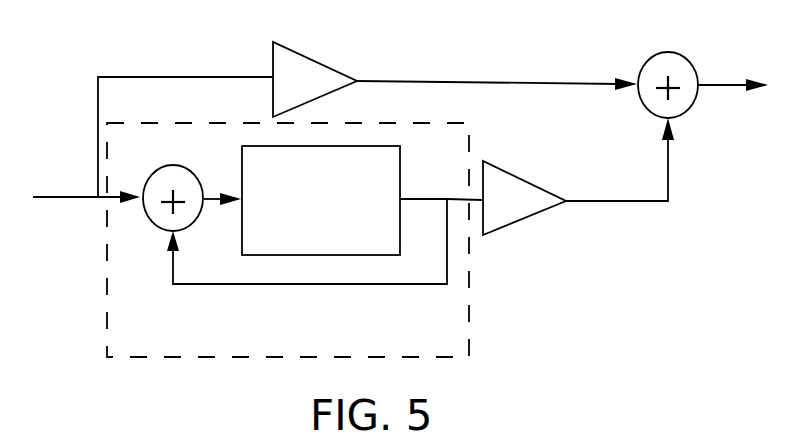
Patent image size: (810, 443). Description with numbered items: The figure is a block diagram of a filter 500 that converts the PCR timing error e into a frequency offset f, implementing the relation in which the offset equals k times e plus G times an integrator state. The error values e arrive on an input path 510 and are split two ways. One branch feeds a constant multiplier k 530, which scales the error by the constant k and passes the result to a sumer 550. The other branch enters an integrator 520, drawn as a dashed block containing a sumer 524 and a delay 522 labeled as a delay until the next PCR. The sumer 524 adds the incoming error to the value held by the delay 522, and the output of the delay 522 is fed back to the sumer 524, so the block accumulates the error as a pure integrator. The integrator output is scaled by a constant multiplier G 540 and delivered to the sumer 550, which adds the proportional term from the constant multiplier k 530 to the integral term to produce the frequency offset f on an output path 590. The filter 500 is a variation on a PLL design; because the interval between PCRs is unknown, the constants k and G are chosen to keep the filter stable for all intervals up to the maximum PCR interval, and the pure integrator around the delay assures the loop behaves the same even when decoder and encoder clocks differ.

The filter 500 is at (666, 321).
The path 510 is at (68, 198).
The integrator 520 is at (240, 344).
The delay 522 is at (298, 238).
The sumer 524 is at (150, 212).
The constant multiplier k 530 is at (287, 58).
The constant multiplier G 540 is at (520, 208).
The sumer 550 is at (680, 66).
The path 590 is at (710, 86).